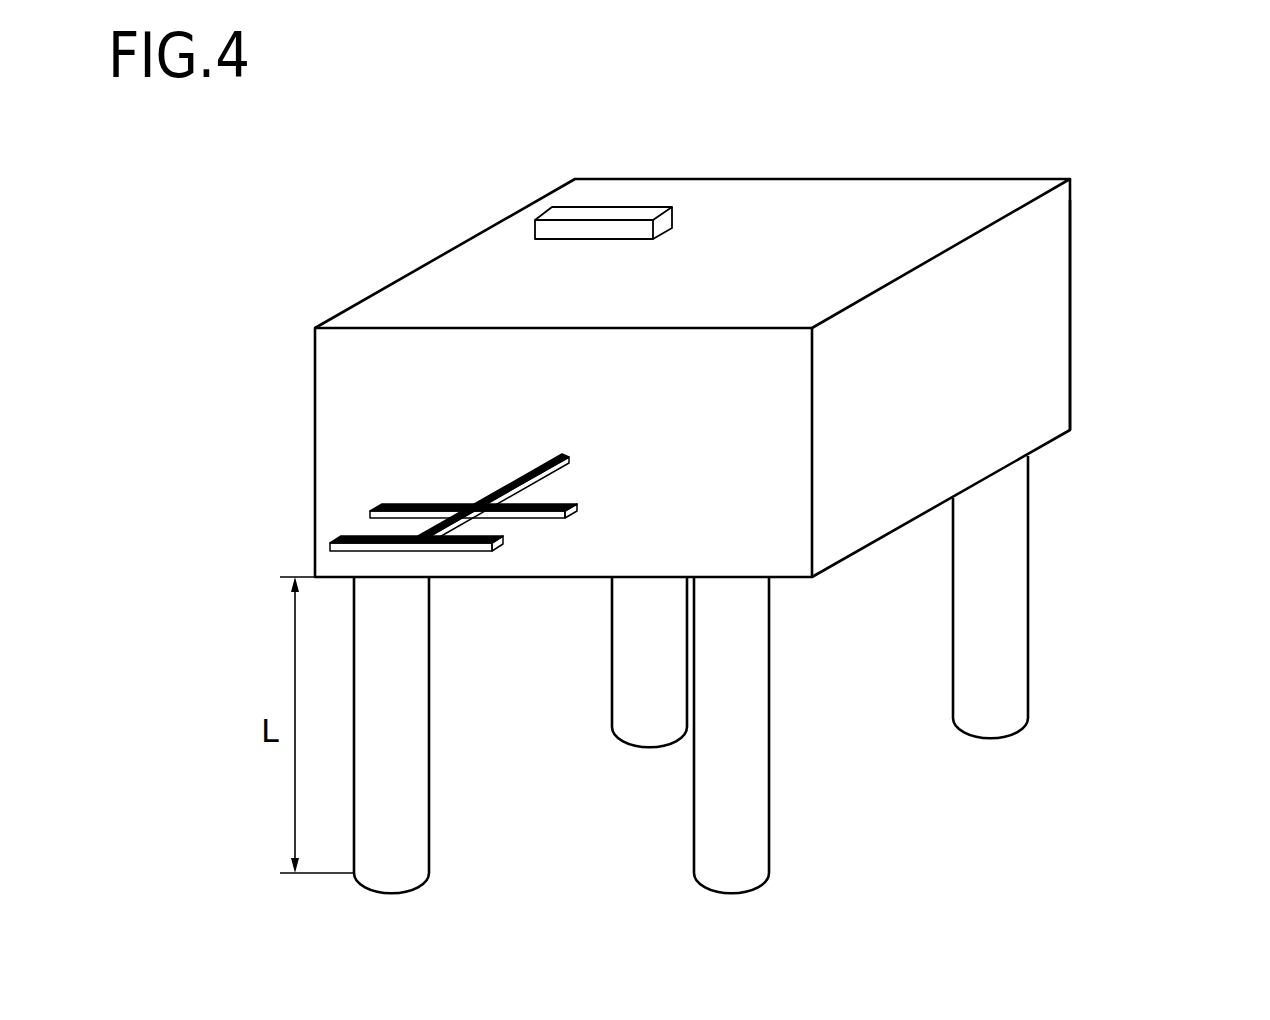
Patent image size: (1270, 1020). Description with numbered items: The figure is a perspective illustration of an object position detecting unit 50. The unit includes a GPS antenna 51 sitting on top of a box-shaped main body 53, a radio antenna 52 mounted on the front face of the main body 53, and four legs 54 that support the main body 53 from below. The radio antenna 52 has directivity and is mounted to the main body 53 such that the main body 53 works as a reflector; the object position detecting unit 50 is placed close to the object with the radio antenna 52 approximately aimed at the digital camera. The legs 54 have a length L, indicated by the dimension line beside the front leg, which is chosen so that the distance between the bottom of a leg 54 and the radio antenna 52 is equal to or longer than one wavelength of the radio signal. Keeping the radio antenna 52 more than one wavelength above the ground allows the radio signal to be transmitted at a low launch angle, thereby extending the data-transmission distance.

The object position detecting unit 50 is at (787, 148).
The GPS antenna 51 is at (612, 207).
The radio antenna 52 is at (385, 505).
The main body 53 is at (1070, 333).
The legs 54 is at (1028, 616).